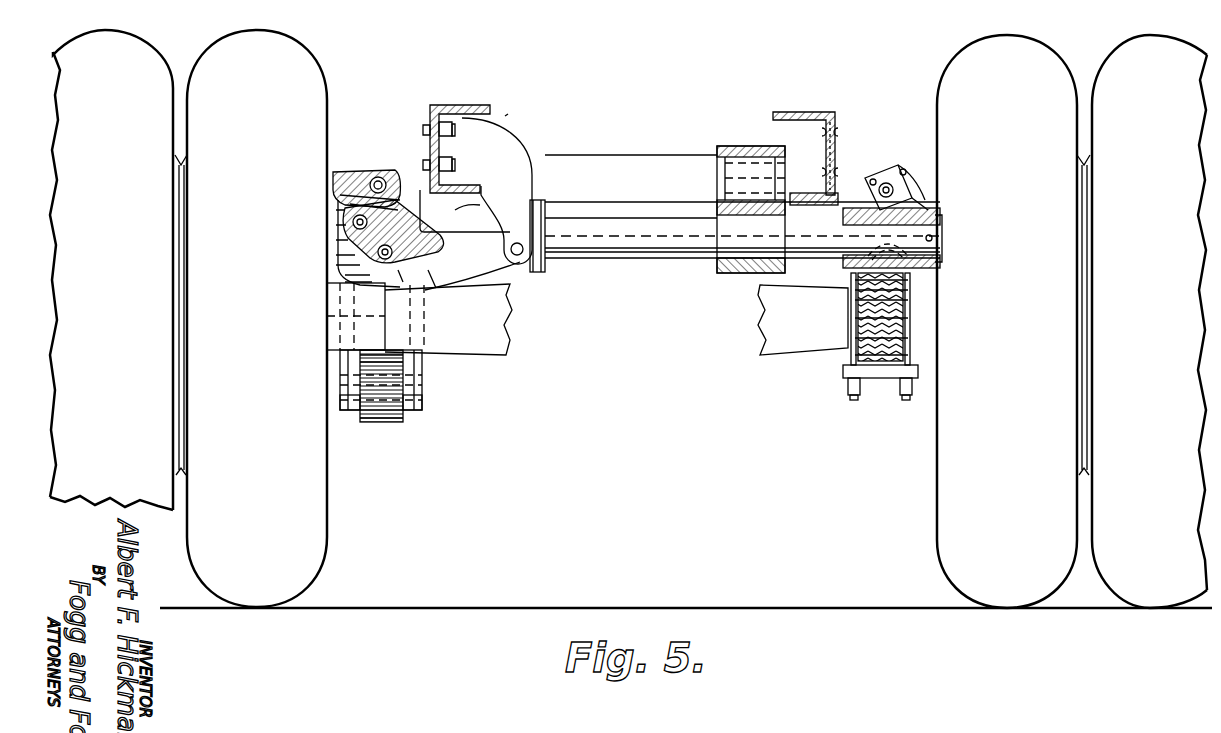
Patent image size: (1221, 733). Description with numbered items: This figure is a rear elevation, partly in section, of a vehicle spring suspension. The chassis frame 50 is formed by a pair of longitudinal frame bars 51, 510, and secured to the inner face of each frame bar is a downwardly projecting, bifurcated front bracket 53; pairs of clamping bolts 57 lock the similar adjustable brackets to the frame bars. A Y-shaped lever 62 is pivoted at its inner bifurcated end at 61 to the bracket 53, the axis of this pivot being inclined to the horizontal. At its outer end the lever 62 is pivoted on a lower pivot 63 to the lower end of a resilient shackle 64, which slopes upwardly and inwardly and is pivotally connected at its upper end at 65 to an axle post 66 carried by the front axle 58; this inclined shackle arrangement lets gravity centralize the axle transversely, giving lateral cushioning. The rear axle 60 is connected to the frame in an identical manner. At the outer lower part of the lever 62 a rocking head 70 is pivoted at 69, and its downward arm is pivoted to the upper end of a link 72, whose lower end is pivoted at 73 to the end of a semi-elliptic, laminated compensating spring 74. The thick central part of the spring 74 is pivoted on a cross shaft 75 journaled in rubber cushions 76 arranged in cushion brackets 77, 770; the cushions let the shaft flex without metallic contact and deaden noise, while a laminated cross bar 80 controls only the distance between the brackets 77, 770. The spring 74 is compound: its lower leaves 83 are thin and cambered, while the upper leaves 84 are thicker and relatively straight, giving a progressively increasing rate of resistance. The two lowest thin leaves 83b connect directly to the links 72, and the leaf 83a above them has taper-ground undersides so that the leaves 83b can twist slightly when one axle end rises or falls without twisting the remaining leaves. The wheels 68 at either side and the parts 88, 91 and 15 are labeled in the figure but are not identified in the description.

The dual tires 68 is at (188, 74).
The longitudinal frame bar 51 is at (474, 108).
The rectangular frame 50 is at (514, 117).
The front bifurcated bracket 53 is at (515, 155).
The clamping bolts 57 is at (452, 158).
The pivot 61 is at (510, 249).
The axle post 66 is at (352, 160).
The resilient shackle 64 is at (378, 170).
The upper pivot 65 is at (385, 170).
The shim 88 is at (384, 192).
The lower pivot 63 is at (342, 227).
The bracket 91 is at (333, 207).
The pivot 69 is at (346, 249).
The rocking head 70 is at (355, 273).
The Y-shaped lever 62 is at (450, 285).
The rear axle 60 is at (508, 325).
The pivot 73 is at (425, 405).
The semi-elliptic compensating spring 74 is at (381, 426).
The link 72 is at (348, 412).
The lower leaves 83 is at (400, 362).
The lowermost spring leaf 83a is at (908, 338).
The lower thin leaves 83b is at (400, 430).
The laminated cross bar 80 is at (627, 160).
The cross shaft 75 is at (628, 210).
The cushion bracket 77 is at (548, 272).
The cushion bracket 770 is at (720, 272).
The rubber cushions 76 is at (750, 273).
The longitudinal frame bar 510 is at (834, 114).
The upper leaves 84 is at (908, 300).
The front axle 58 is at (758, 330).
The rod end 15 is at (843, 320).